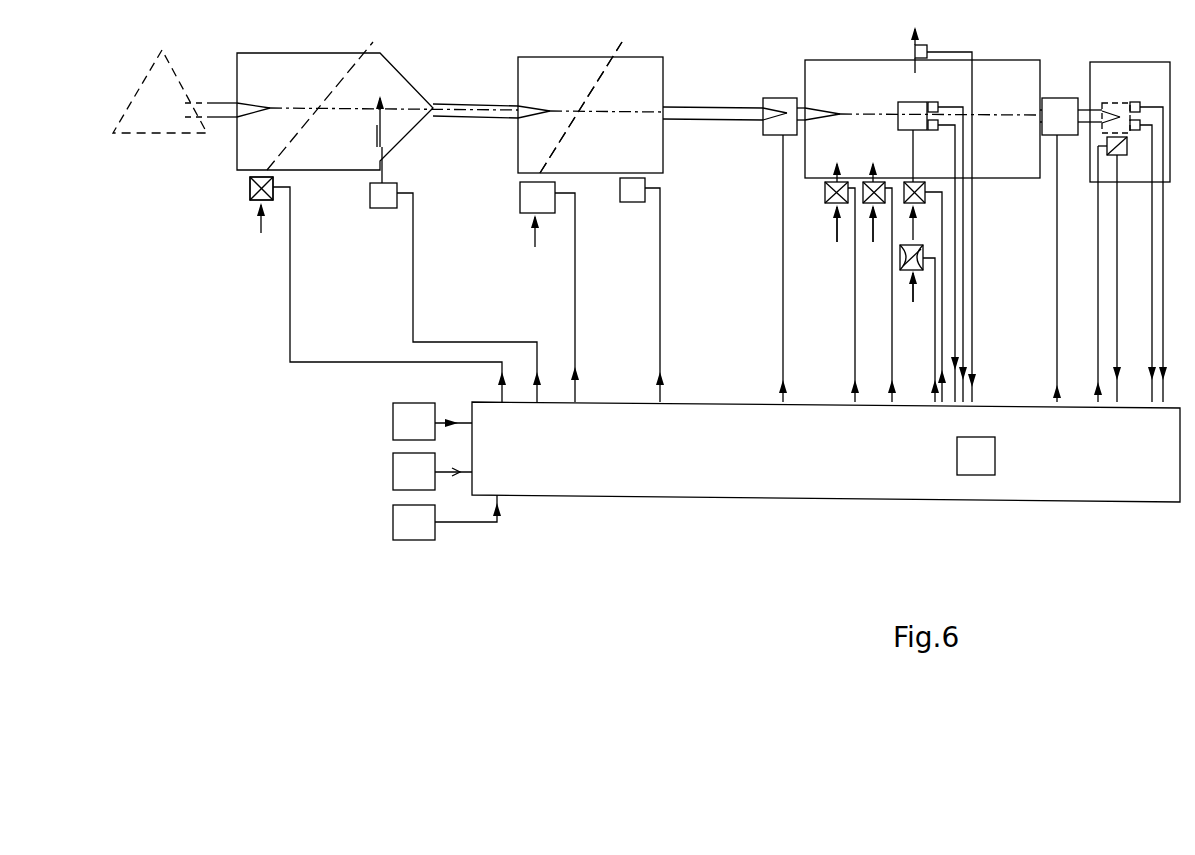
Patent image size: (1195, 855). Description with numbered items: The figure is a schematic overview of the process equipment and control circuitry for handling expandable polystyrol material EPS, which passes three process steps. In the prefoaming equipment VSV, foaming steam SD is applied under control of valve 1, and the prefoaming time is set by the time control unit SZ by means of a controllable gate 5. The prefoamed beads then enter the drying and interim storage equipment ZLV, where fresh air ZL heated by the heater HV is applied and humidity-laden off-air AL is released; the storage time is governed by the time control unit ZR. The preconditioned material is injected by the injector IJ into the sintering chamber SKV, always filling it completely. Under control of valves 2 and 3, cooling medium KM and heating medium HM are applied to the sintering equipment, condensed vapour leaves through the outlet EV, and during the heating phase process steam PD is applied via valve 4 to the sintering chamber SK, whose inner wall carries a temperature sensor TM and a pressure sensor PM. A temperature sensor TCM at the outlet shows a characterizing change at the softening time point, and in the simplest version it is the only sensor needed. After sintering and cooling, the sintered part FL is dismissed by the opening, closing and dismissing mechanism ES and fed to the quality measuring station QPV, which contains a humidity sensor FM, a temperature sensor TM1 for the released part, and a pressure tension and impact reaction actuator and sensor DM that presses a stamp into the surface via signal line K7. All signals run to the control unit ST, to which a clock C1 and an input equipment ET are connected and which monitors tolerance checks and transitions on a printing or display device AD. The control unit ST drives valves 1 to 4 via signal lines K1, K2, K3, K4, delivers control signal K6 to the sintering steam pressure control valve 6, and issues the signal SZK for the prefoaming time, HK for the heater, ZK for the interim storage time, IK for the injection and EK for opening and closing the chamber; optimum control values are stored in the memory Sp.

The valve 1 is at (259, 202).
The valve 2 is at (832, 203).
The valve 3 is at (872, 203).
The valve 4 is at (917, 212).
The controllable gate 5 is at (392, 142).
The sintering steam pressure control valve 6 is at (900, 270).
The expandable polystyrol material EPS is at (178, 133).
The prefoaming equipment VSV is at (283, 88).
The drying and interim storage equipment ZLV is at (563, 88).
The sintering chamber SKV is at (851, 100).
The injector IJ is at (787, 97).
The opening, closing and dismissing mechanism ES is at (1077, 94).
The quality measuring station QPV is at (1097, 68).
The foaming steam SD is at (259, 222).
The time control unit SZ is at (388, 207).
The heater HV is at (530, 193).
The time control unit ZR is at (628, 192).
The sintering chamber SK is at (903, 128).
The temperature sensor TM is at (946, 88).
The pressure sensor PM is at (934, 132).
The outlet EV is at (915, 57).
The temperature sensor TCM is at (925, 47).
The sintered part FL is at (1133, 87).
The temperature sensor TM1 is at (1136, 102).
The humidity sensor FM is at (1142, 125).
The pressure tension and impact reaction actuator and sensor DM is at (1127, 158).
The control unit ST is at (712, 463).
The memory Sp is at (976, 456).
The clock C1 is at (432, 421).
The input equipment ET is at (432, 471).
The printing or display device AD is at (447, 517).
The signal line K1 is at (290, 272).
The signal line K2 is at (852, 315).
The signal line K3 is at (892, 315).
The signal line K4 is at (942, 356).
The control signal K6 is at (935, 349).
The signal line K7 is at (1098, 328).
The signal SZK is at (440, 262).
The signal HK is at (577, 272).
The signal ZK is at (663, 254).
The signal IK is at (785, 313).
The signal EK is at (1060, 243).
The fresh air ZL is at (532, 245).
The cooling medium KM is at (830, 237).
The heating medium HM is at (872, 237).
The process steam PD is at (914, 304).
The off-air AL is at (597, 99).